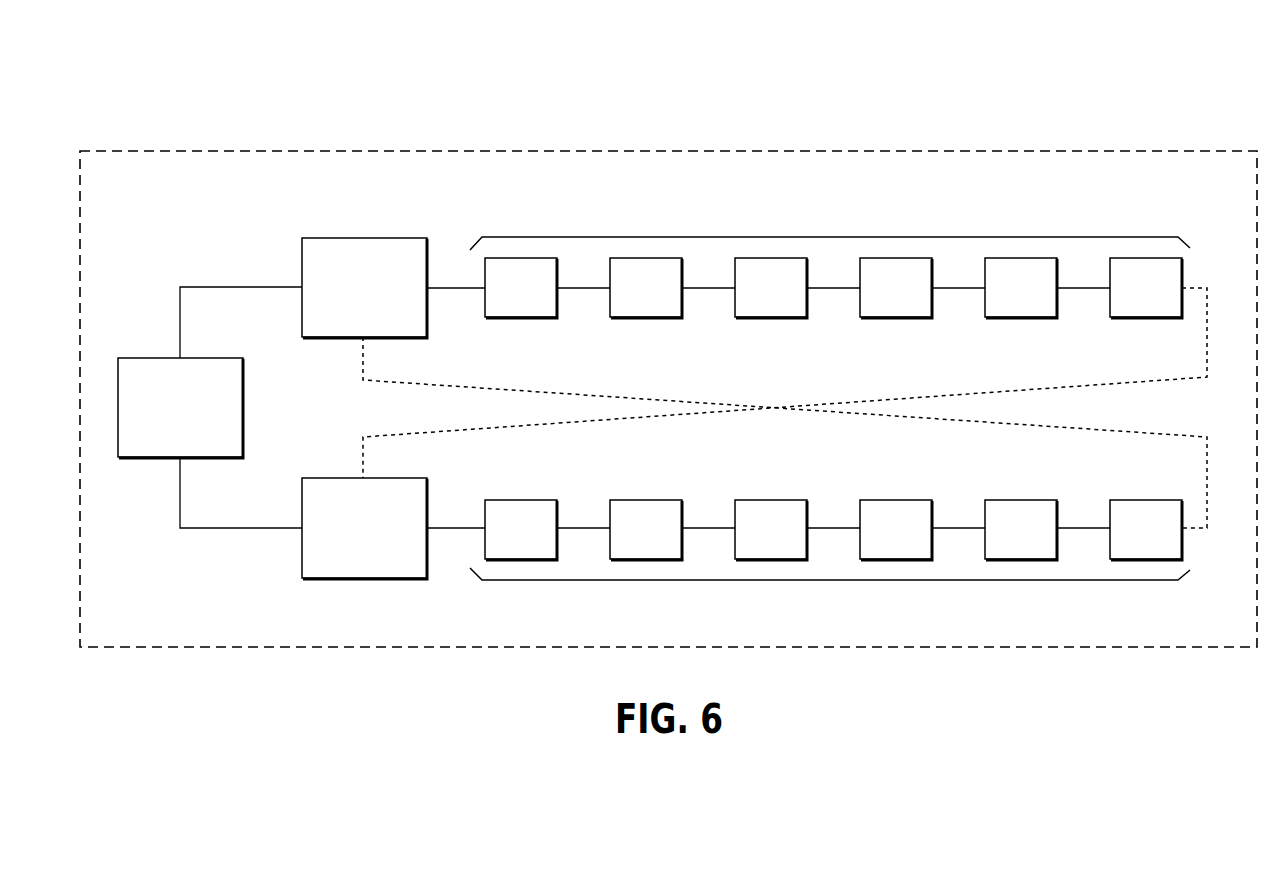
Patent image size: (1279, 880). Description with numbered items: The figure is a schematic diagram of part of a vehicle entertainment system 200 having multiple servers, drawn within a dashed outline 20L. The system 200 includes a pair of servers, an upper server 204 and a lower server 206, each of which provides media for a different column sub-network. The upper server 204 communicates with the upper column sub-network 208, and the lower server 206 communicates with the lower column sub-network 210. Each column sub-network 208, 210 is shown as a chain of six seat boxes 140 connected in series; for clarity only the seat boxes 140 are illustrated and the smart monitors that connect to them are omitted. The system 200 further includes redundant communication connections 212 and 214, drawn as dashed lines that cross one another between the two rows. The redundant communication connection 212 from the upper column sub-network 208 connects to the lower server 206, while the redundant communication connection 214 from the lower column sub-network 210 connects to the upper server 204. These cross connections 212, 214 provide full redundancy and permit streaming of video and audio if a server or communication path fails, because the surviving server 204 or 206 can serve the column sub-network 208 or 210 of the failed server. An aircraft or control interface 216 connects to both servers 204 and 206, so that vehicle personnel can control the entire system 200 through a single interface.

The lighting zone / location 20L is at (665, 151).
The system 200 is at (222, 576).
The upper server 204 is at (362, 238).
The lower server 206 is at (360, 578).
The upper column sub-network 208 is at (780, 237).
The lower column sub-network 210 is at (880, 580).
The redundant communication connection 212 is at (1080, 380).
The redundant communication connection 214 is at (1095, 437).
The aircraft or control interface 216 is at (245, 405).
The seat box 140 is at (1165, 542).